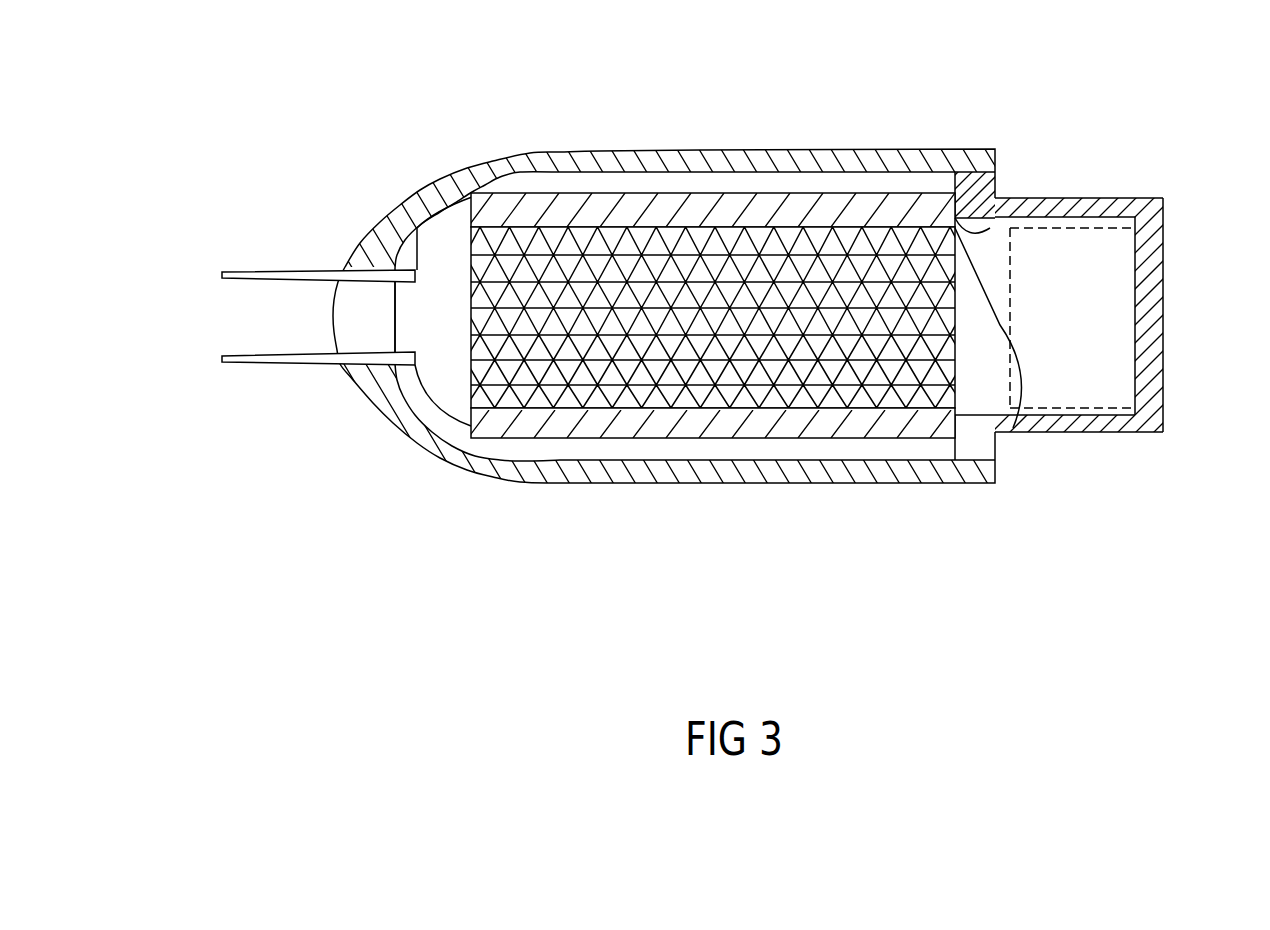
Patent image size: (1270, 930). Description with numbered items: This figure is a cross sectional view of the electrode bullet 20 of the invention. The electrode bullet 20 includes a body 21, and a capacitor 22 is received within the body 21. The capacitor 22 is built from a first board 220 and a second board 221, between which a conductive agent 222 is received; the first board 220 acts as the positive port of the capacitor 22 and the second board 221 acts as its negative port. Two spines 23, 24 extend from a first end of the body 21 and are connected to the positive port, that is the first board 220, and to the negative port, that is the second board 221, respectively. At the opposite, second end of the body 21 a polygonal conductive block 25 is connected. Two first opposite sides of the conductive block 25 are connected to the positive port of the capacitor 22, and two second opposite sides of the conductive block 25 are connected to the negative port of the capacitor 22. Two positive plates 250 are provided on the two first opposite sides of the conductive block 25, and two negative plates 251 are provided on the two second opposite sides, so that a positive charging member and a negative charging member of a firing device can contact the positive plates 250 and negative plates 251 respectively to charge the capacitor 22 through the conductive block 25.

The electrode bullet 20 is at (829, 73).
The body 21 is at (840, 148).
The capacitor 22 is at (442, 252).
The spine 23 is at (313, 271).
The spine 24 is at (247, 355).
The first board 220 is at (598, 207).
The second board 221 is at (573, 420).
The conductive agent 222 is at (670, 250).
The conductive block 25 is at (1010, 313).
The positive plates 250 is at (1103, 197).
The negative plates 251 is at (1163, 428).